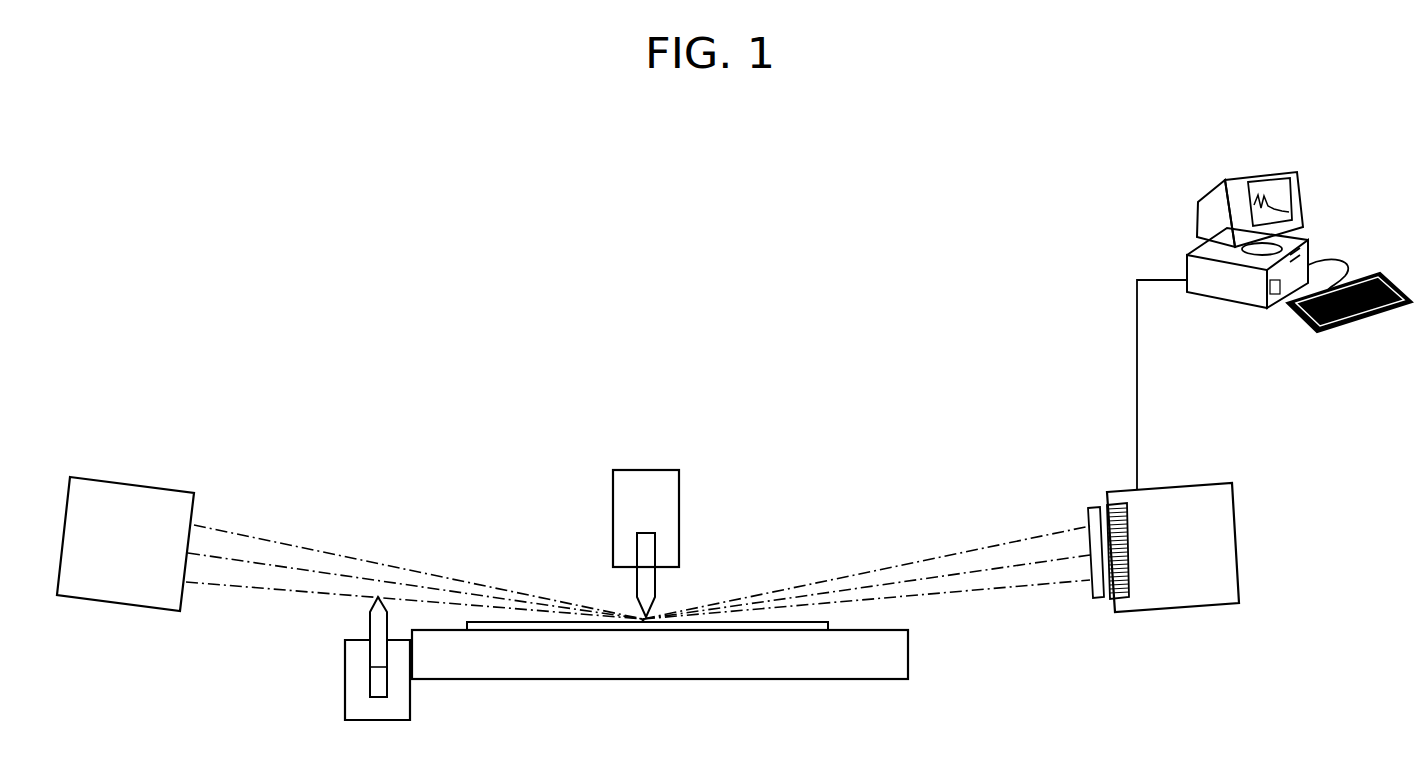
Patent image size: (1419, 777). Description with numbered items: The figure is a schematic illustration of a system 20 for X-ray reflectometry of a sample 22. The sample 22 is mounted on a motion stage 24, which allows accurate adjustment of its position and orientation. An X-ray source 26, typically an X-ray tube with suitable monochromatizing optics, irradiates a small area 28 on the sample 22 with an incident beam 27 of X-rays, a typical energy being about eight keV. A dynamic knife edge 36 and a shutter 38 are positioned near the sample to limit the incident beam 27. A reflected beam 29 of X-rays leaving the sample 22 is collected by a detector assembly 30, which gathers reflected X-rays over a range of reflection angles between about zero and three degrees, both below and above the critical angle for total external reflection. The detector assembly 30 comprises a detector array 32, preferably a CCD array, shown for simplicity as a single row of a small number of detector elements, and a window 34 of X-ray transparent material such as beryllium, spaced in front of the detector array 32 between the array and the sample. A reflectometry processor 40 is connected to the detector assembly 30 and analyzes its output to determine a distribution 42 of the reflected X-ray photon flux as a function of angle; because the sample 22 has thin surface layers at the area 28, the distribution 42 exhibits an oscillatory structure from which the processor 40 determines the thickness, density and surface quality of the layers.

The system 20 is at (286, 233).
The sample 22 is at (797, 622).
The motion stage 24 is at (910, 652).
The X-ray source 26 is at (150, 453).
The incident beam 27 is at (321, 551).
The small area 28 is at (637, 624).
The reflected beam 29 is at (957, 553).
The detector assembly 30 is at (1232, 520).
The detector array 32 is at (1128, 542).
The window 34 is at (1090, 512).
The dynamic knife edge 36 is at (647, 588).
The shutter 38 is at (370, 605).
The reflectometry processor 40 is at (1183, 262).
The distribution 42 is at (1263, 193).